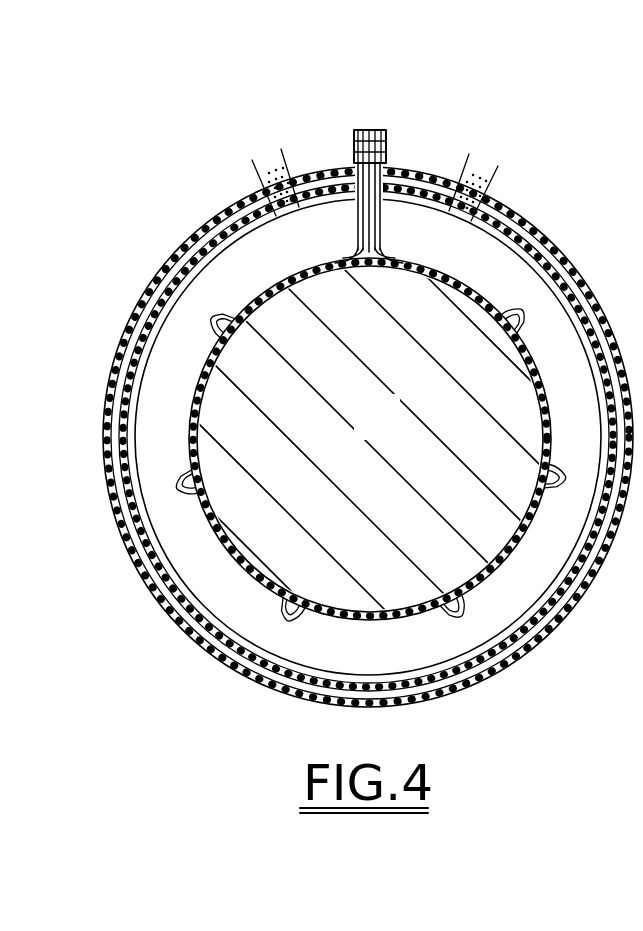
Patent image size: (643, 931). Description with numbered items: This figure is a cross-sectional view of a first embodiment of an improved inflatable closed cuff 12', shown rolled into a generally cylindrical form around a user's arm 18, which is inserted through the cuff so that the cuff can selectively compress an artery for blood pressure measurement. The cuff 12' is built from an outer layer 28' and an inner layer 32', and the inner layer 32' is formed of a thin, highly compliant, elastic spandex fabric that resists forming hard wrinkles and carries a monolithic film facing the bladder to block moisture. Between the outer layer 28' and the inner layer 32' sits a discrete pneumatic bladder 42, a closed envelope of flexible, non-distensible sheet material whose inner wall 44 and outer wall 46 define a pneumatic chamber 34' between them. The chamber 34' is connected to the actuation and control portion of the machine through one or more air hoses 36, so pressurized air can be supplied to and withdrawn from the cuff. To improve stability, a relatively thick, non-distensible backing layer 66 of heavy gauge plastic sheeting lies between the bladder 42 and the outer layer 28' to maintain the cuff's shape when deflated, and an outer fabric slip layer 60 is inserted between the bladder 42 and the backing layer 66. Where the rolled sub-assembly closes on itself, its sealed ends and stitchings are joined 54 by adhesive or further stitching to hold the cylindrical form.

The improved inflatable closed cuff 12' is at (331, 426).
The user's arm 18 is at (397, 436).
The outer layer 28' is at (329, 437).
The inner layer 32' is at (299, 443).
The pneumatic chamber 34' is at (319, 437).
The air hoses 36 is at (280, 158).
The pneumatic bladder 42 is at (216, 216).
The inner wall 44 is at (257, 292).
The outer wall 46 is at (162, 298).
The joint 54 is at (370, 128).
The outer fabric slip layer 60 is at (150, 587).
The backing layer 66 is at (196, 643).